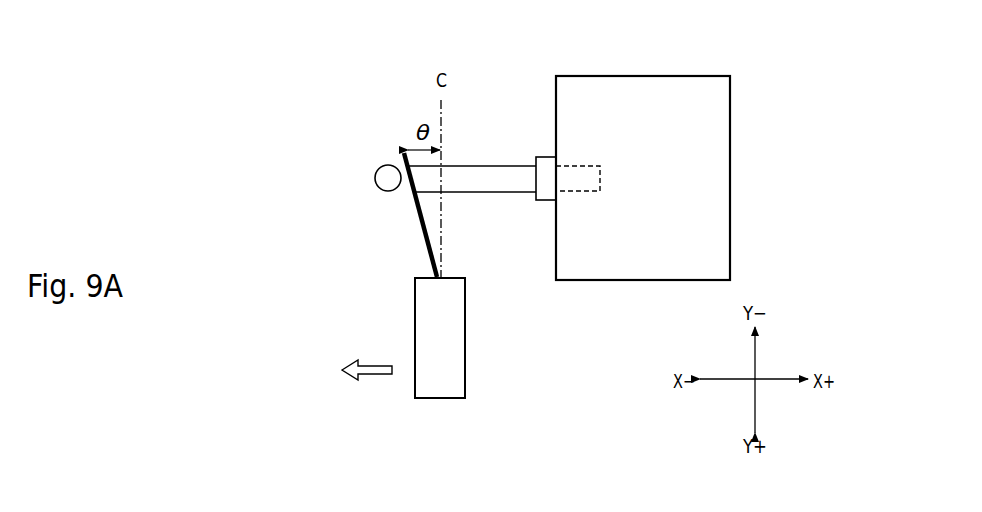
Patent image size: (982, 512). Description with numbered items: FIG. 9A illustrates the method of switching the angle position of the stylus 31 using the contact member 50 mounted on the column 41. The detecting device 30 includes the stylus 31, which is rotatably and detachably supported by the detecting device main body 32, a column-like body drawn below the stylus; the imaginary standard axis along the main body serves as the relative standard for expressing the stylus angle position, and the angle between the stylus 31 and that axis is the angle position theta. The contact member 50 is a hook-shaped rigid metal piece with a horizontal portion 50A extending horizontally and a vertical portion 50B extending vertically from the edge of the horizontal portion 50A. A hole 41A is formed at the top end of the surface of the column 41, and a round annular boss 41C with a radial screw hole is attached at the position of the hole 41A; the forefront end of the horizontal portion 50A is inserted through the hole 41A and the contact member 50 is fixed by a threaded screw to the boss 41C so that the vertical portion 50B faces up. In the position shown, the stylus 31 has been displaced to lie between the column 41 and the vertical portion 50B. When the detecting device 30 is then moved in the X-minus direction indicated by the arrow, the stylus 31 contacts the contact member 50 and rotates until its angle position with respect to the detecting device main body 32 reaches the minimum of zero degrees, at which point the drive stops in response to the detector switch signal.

The detecting device 30 is at (345, 237).
The stylus 31 is at (428, 245).
The detecting device main body 32 is at (415, 335).
The column 41 is at (640, 76).
The hole 41A is at (583, 165).
The boss 41C is at (543, 157).
The contact member 50 is at (513, 89).
The horizontal portion 50A is at (388, 177).
The vertical portion 50B is at (473, 166).